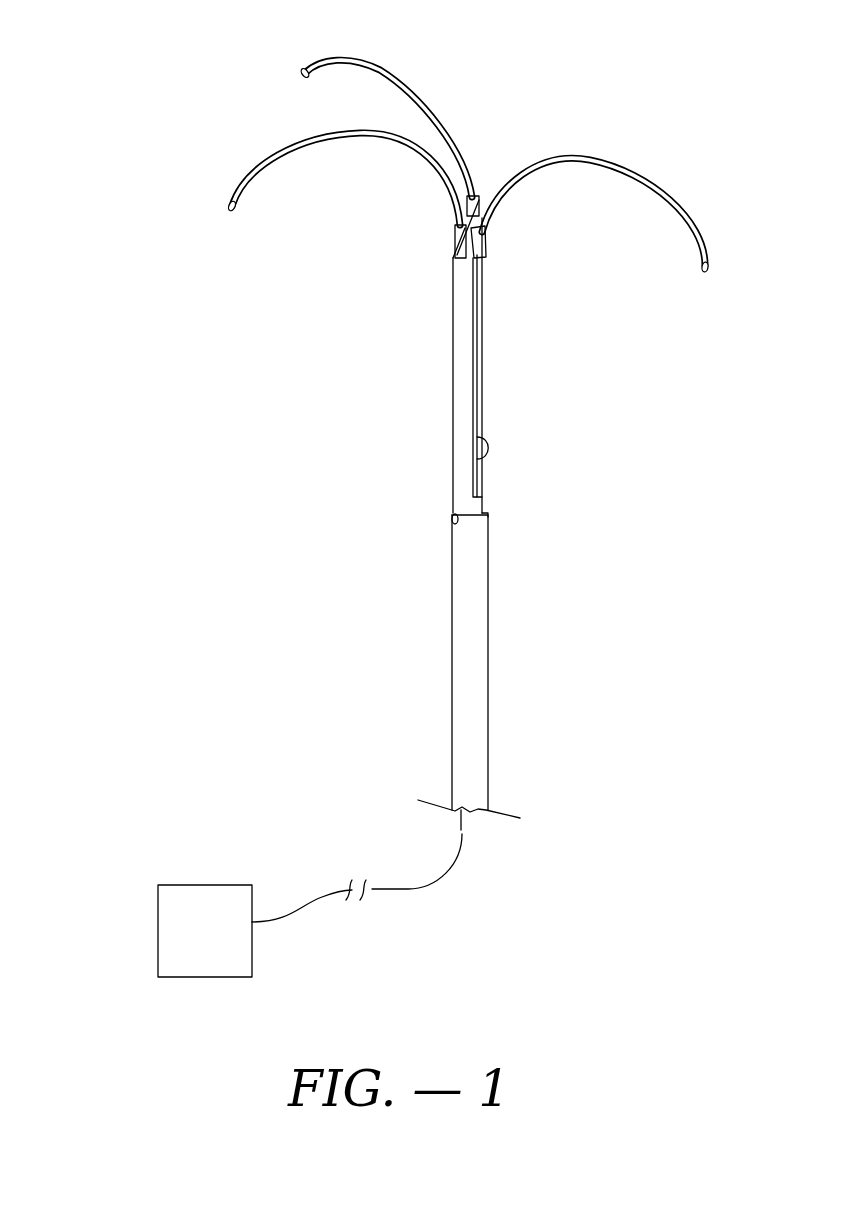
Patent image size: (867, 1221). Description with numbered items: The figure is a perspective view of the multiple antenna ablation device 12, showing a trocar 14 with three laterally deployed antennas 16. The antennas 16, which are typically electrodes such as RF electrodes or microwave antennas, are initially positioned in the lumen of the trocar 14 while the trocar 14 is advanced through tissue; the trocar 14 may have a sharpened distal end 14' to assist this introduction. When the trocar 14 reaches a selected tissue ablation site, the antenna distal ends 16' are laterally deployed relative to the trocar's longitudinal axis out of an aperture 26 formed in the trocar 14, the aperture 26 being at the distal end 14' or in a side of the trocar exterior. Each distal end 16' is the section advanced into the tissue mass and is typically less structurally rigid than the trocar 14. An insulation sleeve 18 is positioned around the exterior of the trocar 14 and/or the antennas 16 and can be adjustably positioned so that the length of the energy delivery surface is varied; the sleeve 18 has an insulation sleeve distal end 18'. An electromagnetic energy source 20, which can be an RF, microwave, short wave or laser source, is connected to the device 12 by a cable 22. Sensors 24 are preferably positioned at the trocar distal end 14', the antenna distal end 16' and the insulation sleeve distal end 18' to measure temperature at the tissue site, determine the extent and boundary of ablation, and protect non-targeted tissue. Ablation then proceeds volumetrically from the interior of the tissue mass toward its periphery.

The multiple antenna ablation device 12 is at (176, 592).
The trocar 14 is at (414, 365).
The trocar distal end 14' is at (514, 348).
The antenna 16 is at (468, 160).
The antenna distal end 16' is at (517, 166).
The insulation sleeve 18 is at (486, 477).
The insulation sleeve distal end 18' is at (545, 531).
The electromagnetic energy source 20 is at (213, 885).
The cable 22 is at (408, 890).
The sensor 24 is at (228, 208).
The aperture 26 is at (477, 437).